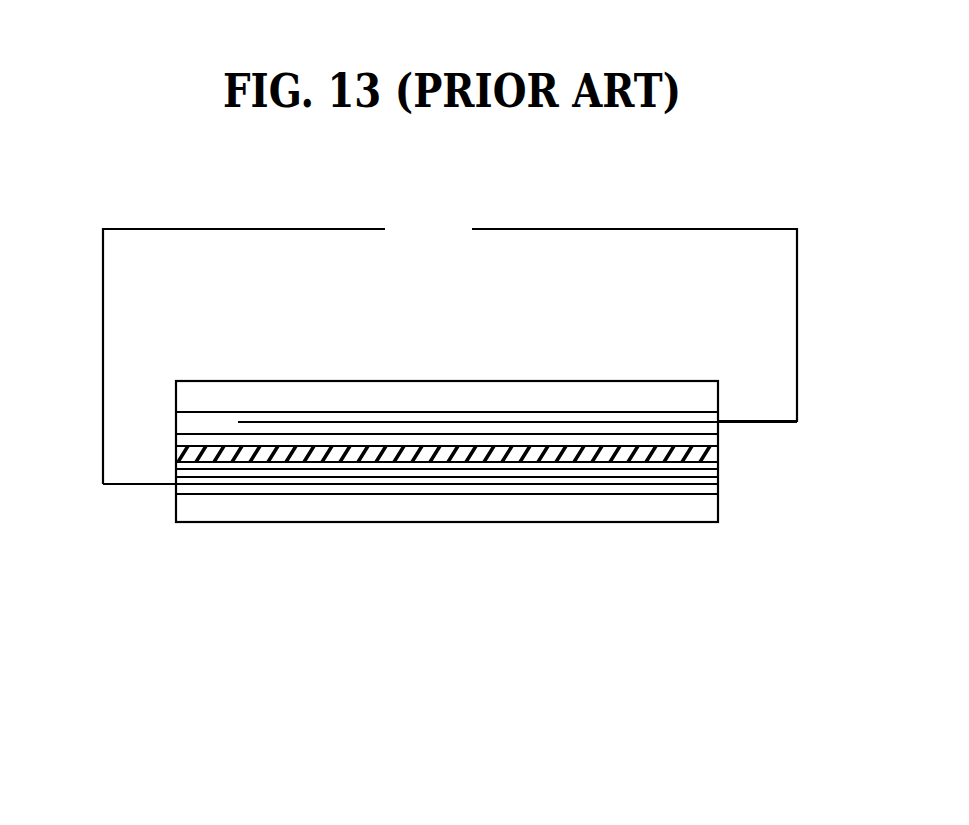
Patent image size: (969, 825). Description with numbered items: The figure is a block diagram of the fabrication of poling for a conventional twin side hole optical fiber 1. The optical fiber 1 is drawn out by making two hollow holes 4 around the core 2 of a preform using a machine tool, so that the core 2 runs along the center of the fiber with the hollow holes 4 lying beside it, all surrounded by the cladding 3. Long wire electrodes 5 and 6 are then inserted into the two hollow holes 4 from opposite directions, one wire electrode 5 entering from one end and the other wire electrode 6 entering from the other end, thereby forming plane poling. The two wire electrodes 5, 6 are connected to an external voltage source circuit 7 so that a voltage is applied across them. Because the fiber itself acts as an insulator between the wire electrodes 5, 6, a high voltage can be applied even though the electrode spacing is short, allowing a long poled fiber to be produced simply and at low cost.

The optical fiber 1 is at (530, 545).
The core 2 is at (293, 463).
The cladding 3 is at (707, 503).
The hollow holes 4 is at (643, 432).
The wire electrode 5 is at (137, 485).
The wire electrode 6 is at (467, 422).
The circuit / voltage source connection 7 is at (418, 223).